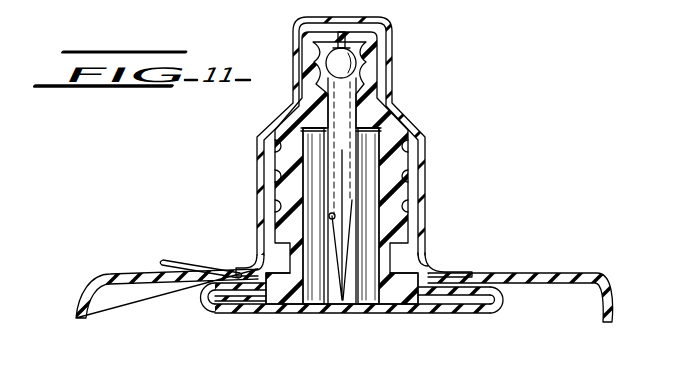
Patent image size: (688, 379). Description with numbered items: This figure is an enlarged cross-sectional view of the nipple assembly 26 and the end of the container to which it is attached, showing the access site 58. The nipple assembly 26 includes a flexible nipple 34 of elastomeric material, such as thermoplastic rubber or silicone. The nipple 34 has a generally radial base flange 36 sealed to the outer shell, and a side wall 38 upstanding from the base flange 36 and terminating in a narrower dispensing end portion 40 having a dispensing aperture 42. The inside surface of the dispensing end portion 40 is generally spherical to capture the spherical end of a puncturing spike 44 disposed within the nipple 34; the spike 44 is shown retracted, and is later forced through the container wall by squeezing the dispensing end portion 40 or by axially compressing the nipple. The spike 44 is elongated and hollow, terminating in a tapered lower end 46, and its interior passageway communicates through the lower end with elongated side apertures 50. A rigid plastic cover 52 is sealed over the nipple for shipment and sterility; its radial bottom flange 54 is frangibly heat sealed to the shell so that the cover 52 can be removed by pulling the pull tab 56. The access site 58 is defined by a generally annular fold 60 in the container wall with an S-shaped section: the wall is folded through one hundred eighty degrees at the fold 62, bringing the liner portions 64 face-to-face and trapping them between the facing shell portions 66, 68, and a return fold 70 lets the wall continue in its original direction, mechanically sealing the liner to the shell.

The nipple assembly 26 is at (434, 125).
The flexible nipple 34 is at (397, 107).
The base flange 36 is at (426, 261).
The side wall 38 is at (404, 156).
The dispensing end portion 40 is at (323, 52).
The dispensing aperture 42 is at (344, 38).
The puncturing spike 44 is at (336, 162).
The tapered lower end 46 is at (352, 262).
The elongated side apertures 50 is at (333, 218).
The cover 52 is at (391, 54).
The bottom flange 54 is at (458, 272).
The pull tab 56 is at (190, 268).
The access site 58 is at (399, 315).
The annular fold 60 is at (493, 321).
The 180° fold 62 is at (262, 288).
The liner portions 64 is at (200, 287).
The shell portion 66 is at (248, 273).
The shell portion 68 is at (224, 310).
The return 180° fold 70 is at (202, 306).